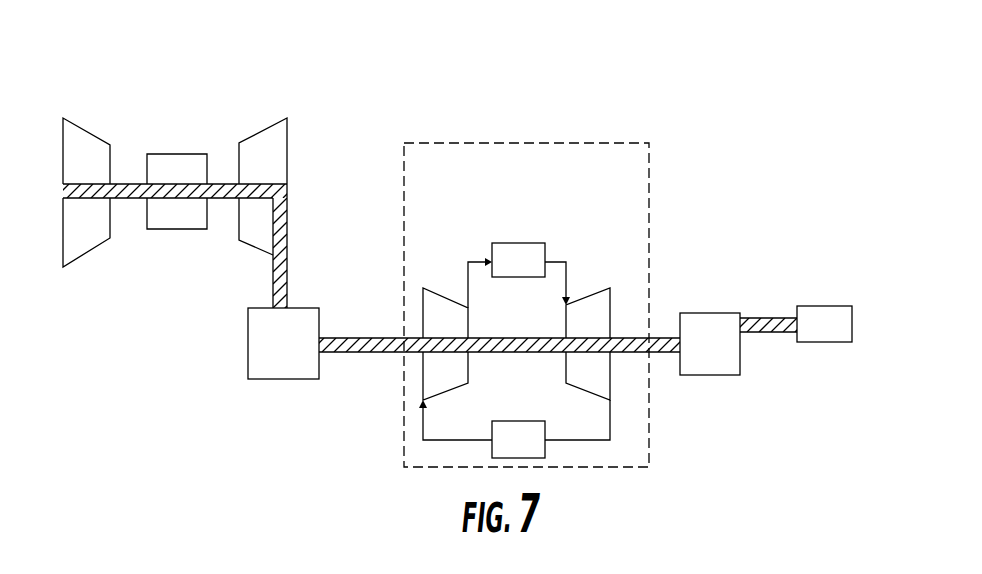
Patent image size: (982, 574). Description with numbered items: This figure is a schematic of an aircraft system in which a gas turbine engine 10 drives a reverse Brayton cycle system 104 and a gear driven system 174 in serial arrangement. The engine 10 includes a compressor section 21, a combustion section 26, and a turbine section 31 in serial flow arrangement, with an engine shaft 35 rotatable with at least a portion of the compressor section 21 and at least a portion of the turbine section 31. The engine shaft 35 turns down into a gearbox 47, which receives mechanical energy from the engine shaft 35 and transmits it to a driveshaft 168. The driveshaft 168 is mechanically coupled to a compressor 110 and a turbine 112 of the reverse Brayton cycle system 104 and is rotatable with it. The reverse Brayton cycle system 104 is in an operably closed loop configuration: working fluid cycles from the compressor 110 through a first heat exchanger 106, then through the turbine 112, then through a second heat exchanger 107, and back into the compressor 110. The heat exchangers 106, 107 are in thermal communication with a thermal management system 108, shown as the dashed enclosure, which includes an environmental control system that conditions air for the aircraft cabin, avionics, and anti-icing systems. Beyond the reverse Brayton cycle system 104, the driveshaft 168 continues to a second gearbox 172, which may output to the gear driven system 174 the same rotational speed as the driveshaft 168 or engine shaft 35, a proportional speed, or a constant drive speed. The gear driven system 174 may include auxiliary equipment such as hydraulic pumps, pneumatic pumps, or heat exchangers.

The gas turbine engine 10 is at (135, 66).
The compressor section 21 is at (80, 150).
The combustion section 26 is at (175, 162).
The turbine section 31 is at (264, 140).
The engine shaft 35 is at (135, 200).
The gearbox 47 is at (295, 357).
The reverse Brayton cycle system 104 is at (516, 217).
The first heat exchanger 106 is at (533, 272).
The second heat exchanger 107 is at (533, 452).
The thermal management system 108 is at (608, 143).
The compressor 110 is at (463, 334).
The turbine 112 is at (604, 334).
The driveshaft 168 is at (377, 352).
The second gearbox 172 is at (727, 353).
The gear driven system 174 is at (841, 335).